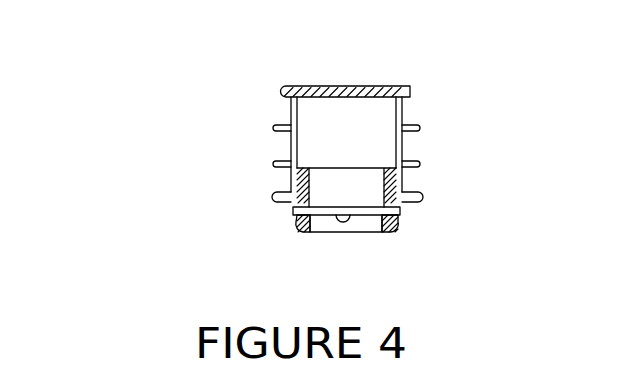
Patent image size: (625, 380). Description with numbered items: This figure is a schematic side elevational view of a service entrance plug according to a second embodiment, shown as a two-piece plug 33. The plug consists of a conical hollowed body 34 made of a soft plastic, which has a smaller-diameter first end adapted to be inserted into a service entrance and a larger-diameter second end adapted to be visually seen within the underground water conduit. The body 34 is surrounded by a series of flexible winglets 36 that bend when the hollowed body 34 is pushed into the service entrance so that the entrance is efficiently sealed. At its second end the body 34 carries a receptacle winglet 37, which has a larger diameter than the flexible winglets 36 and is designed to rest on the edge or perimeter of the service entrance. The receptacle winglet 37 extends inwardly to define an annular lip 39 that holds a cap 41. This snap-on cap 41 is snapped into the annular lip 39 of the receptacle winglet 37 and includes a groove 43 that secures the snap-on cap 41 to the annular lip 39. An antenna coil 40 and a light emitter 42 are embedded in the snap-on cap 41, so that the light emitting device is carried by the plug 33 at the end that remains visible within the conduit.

The two-piece plug 33 is at (403, 65).
The conical hollowed body 34 is at (402, 112).
The flexible winglets 36 is at (273, 164).
The receptacle winglet 37 is at (278, 197).
The annular lip 39 is at (403, 197).
The antenna coil 40 is at (330, 216).
The snap-on cap 41 is at (295, 222).
The light emitter 42 is at (347, 222).
The groove 43 is at (407, 190).